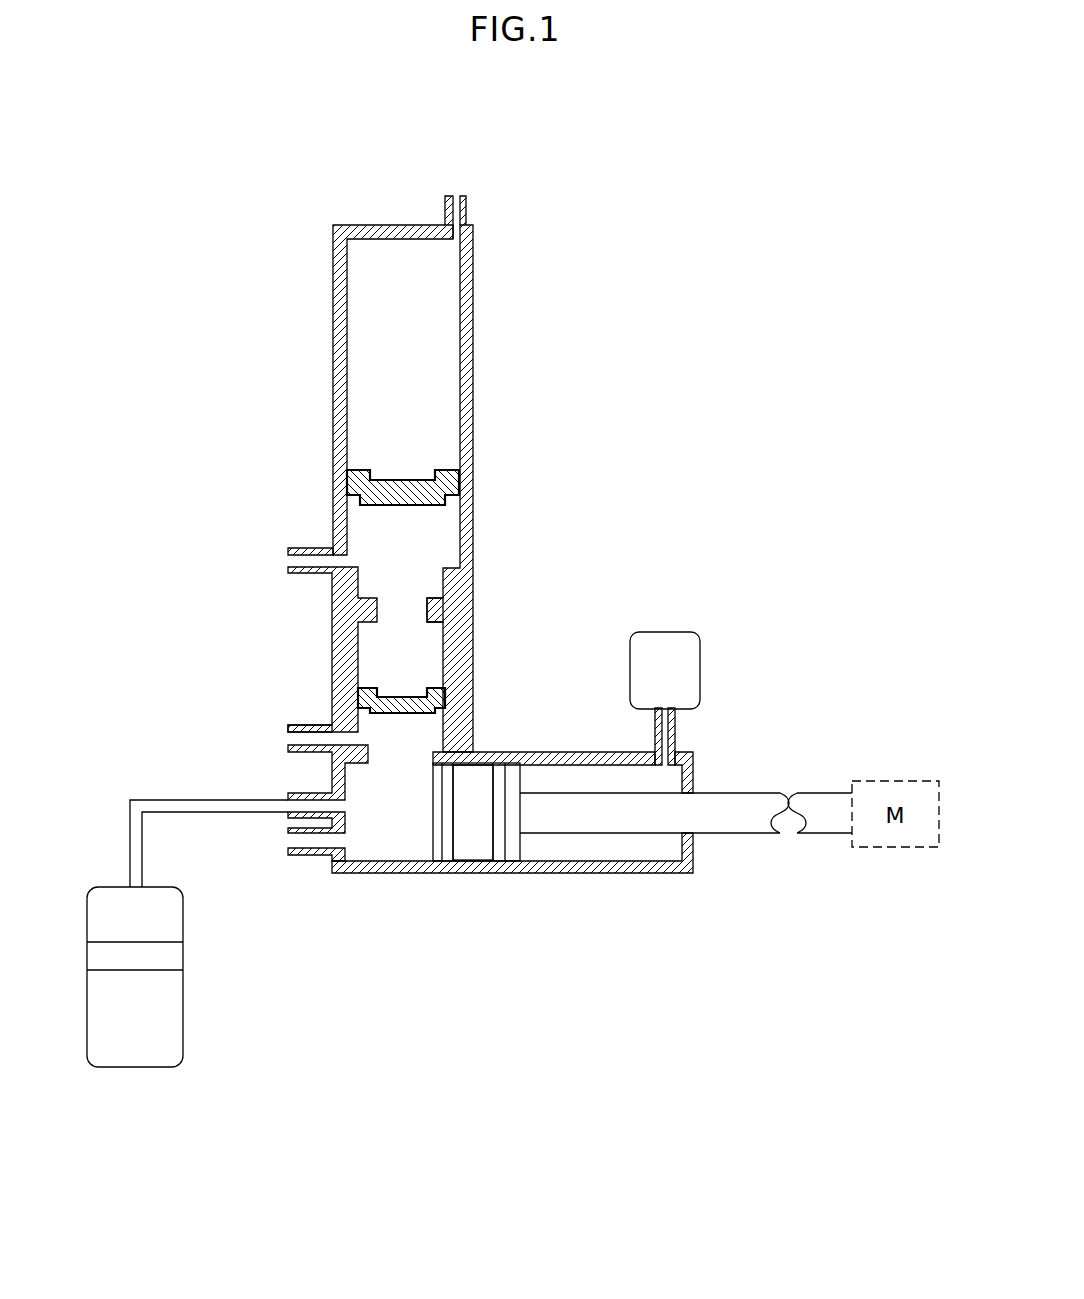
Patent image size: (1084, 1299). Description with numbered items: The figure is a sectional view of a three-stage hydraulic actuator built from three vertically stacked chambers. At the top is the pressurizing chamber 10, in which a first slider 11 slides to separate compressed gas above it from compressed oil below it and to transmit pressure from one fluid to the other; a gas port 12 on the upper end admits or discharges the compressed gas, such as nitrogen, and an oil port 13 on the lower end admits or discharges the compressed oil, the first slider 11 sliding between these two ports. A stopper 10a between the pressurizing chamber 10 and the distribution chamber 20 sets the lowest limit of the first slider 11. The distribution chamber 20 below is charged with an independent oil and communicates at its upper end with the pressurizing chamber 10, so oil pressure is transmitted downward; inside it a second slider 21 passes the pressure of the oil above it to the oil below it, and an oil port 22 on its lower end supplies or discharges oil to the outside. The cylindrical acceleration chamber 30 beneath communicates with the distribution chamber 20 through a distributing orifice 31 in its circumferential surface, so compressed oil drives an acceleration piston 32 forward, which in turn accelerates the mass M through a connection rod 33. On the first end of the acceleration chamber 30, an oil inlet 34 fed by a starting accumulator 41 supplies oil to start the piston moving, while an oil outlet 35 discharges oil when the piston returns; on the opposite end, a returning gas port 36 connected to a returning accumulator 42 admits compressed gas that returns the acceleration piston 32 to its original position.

The pressurizing chamber 10 is at (475, 354).
The stopper 10a is at (437, 612).
The first slider 11 is at (462, 480).
The gas port 12 is at (465, 210).
The oil port 13 is at (308, 547).
The distribution chamber 20 is at (473, 637).
The second slider 21 is at (445, 697).
The oil port 22 is at (307, 725).
The acceleration chamber 30 is at (613, 873).
The distributing orifice 31 is at (407, 764).
The acceleration piston 32 is at (472, 842).
The connection rod 33 is at (725, 815).
The oil inlet 34 is at (302, 795).
The oil outlet 35 is at (312, 852).
The returning gas port 36 is at (677, 730).
The starting accumulator 41 is at (135, 1067).
The returning accumulator 42 is at (700, 655).